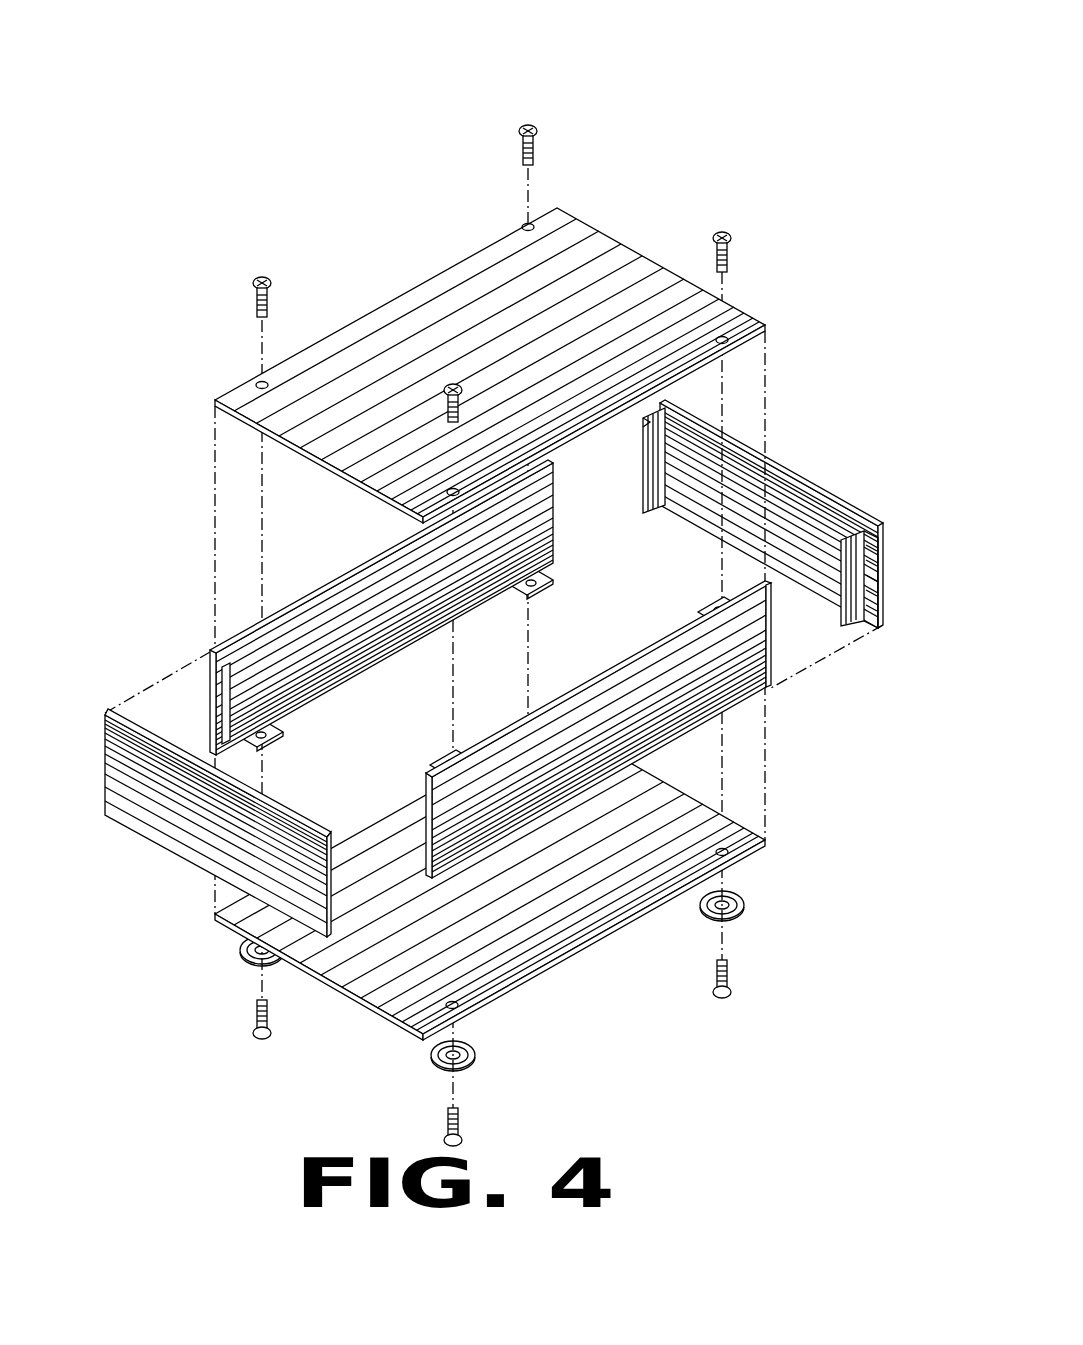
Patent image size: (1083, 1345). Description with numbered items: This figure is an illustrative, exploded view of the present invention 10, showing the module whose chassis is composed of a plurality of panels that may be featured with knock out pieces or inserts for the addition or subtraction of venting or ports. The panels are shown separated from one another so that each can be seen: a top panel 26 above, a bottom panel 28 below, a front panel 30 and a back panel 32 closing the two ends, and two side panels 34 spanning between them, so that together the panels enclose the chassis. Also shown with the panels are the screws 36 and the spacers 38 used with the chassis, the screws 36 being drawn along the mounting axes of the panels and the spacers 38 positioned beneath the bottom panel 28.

The present invention 10 is at (736, 146).
The top panel 26 is at (410, 328).
The bottom panel 28 is at (592, 932).
The front panel 30 is at (193, 830).
The back panel 32 is at (812, 505).
The side panels 34 is at (402, 583).
The screws 36 is at (448, 1125).
The spacers 38 is at (745, 905).